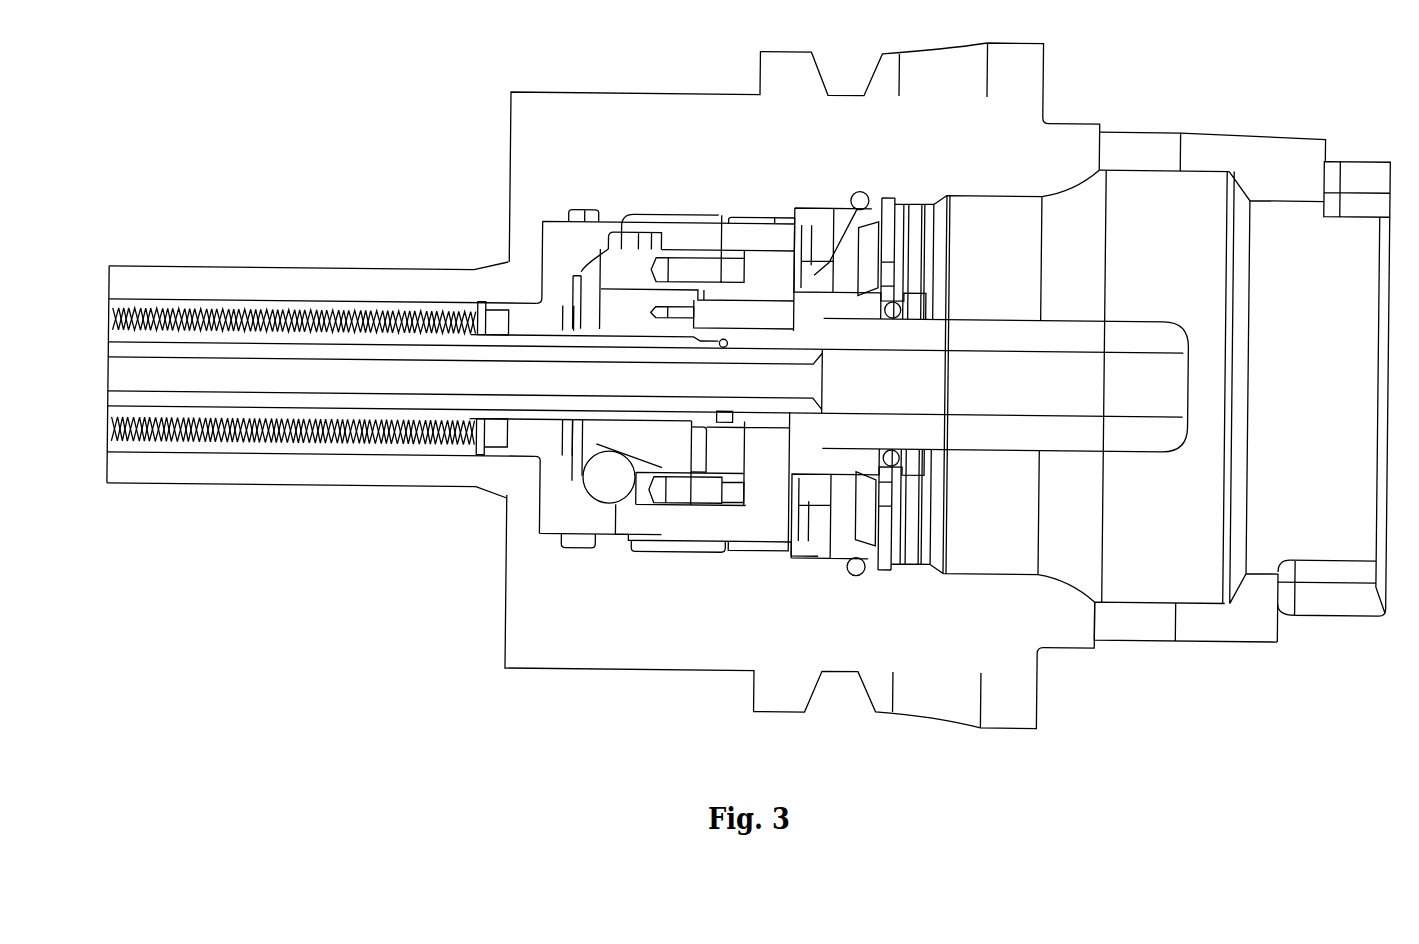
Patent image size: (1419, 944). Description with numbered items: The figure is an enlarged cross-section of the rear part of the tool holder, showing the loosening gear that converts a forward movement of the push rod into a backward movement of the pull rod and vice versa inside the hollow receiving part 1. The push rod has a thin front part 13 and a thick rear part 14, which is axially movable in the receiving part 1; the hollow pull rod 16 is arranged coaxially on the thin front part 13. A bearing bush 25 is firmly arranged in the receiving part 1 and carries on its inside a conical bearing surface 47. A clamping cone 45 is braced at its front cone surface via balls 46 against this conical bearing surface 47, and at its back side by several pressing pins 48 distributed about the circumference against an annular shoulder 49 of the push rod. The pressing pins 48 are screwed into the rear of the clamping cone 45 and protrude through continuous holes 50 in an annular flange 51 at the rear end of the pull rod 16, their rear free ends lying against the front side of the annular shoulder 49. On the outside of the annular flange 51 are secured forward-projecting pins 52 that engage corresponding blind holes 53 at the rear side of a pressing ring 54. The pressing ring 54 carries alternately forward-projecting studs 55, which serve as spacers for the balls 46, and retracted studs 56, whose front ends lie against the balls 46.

The hollow receiving part 1 is at (625, 647).
The thin front part 13 is at (327, 398).
The thick rear part 14 is at (1003, 322).
The hollow pull rod 16 is at (188, 412).
The bearing bush 25 is at (584, 238).
The clamping cone 45 is at (663, 445).
The balls 46 is at (603, 482).
The conical bearing surface 47 is at (580, 272).
The pressing pins 48 is at (757, 312).
The annular shoulder 49 is at (858, 190).
The continuous holes 50 is at (719, 248).
The annular flange 51 is at (727, 445).
The forward-projecting pins 52 is at (713, 505).
The blind holes 53 is at (667, 248).
The pressing ring 54 is at (677, 505).
The projecting studs 55 is at (637, 265).
The retracted studs 56 is at (640, 508).